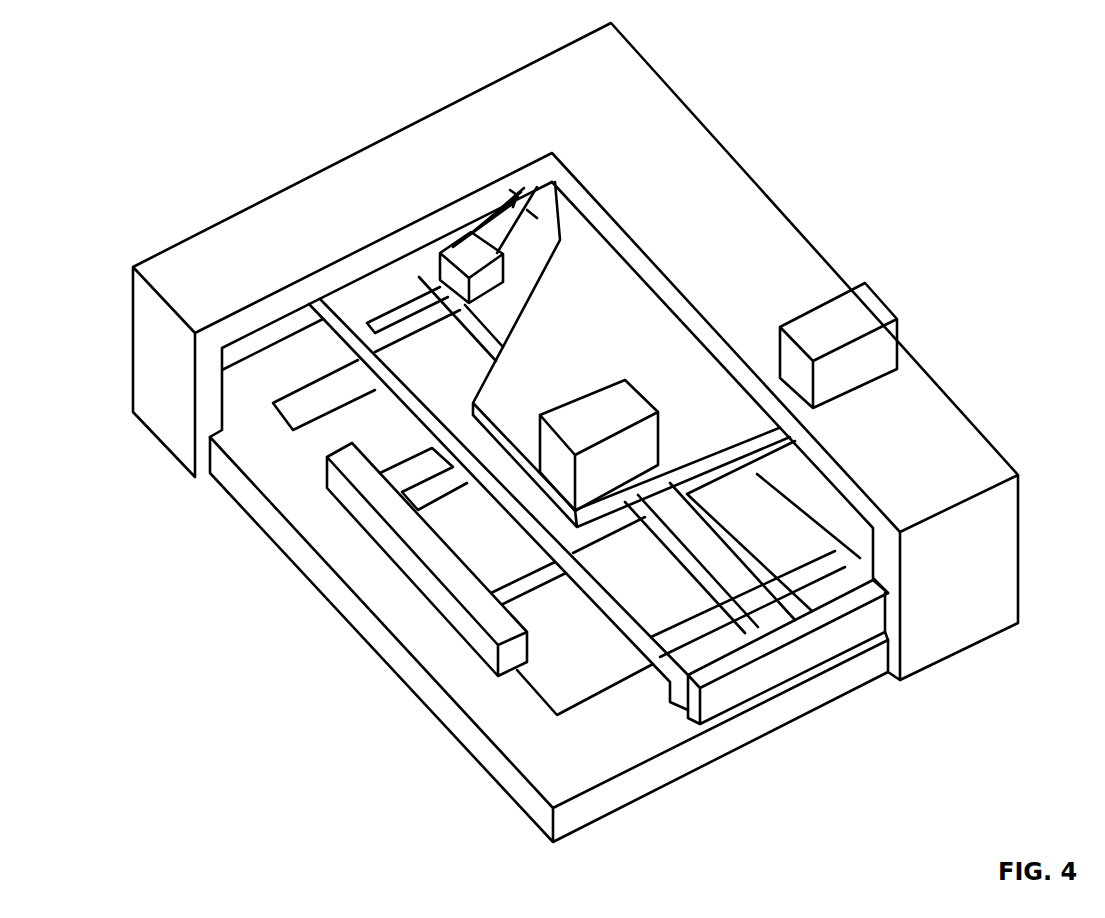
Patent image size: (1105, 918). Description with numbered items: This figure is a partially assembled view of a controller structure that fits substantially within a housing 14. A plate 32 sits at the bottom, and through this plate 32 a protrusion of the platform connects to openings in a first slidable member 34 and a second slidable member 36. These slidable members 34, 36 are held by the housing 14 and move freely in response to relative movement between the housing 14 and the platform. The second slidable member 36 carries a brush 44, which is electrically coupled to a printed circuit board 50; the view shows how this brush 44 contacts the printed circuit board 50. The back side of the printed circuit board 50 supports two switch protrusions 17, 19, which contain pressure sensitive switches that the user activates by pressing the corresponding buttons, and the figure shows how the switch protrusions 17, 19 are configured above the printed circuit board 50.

The housing 14 is at (307, 176).
The switch protrusion 17 is at (652, 404).
The switch protrusion 19 is at (884, 306).
The plate 32 is at (402, 682).
The first slidable member 34 is at (350, 515).
The second slidable member 36 is at (768, 672).
The brush 44 is at (508, 203).
The printed circuit board 50 is at (618, 281).